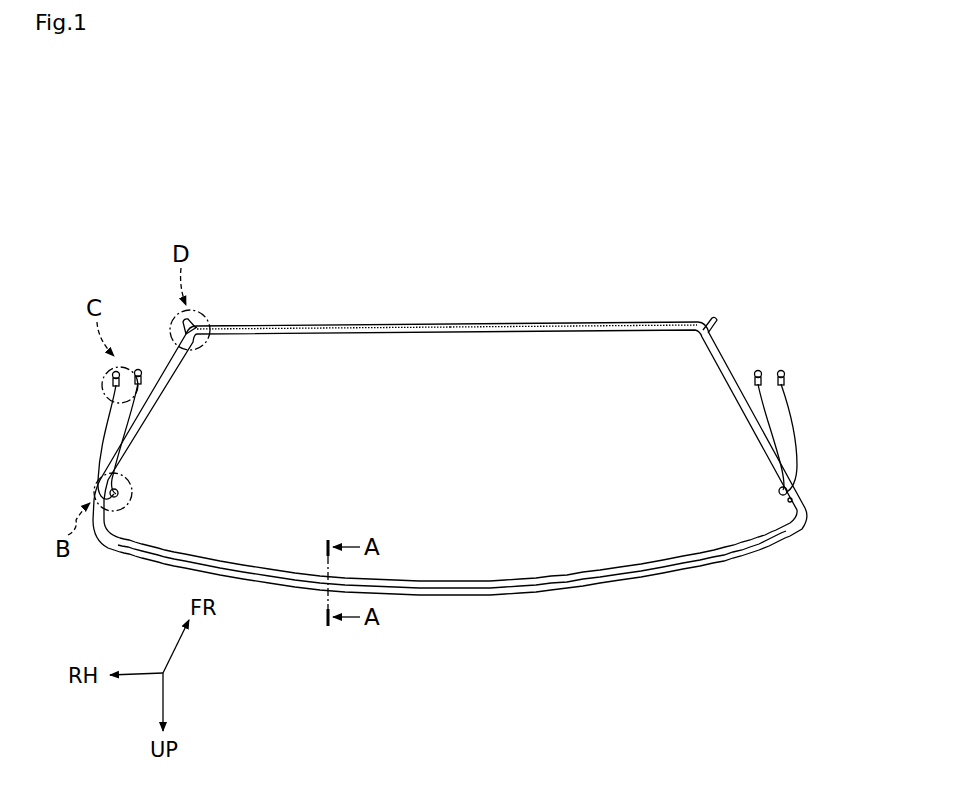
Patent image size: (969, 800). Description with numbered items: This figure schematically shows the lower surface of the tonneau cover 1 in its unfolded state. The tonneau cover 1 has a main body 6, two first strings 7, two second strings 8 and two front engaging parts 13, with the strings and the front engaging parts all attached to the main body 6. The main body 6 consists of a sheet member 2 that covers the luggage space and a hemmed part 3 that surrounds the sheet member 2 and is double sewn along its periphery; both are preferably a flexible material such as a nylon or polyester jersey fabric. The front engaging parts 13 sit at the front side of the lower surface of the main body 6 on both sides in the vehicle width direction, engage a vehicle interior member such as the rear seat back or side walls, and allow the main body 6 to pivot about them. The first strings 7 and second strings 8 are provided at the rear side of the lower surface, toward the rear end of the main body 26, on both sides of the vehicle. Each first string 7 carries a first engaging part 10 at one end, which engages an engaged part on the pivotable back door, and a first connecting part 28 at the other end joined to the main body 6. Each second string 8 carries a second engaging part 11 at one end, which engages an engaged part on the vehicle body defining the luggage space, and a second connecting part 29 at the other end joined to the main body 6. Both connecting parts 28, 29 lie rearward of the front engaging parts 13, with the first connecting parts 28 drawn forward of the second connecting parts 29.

The tonneau cover 1 is at (450, 414).
The sheet member 2 is at (362, 346).
The hemmed part 3 is at (318, 327).
The main body of the tonneau cover 6 is at (620, 346).
The first string 7 is at (128, 418).
The second string 8 is at (107, 453).
The first engaging part 10 is at (758, 366).
The second engaging part 11 is at (784, 370).
The front engaging part 13 is at (200, 320).
The rear end of the main body 26 is at (450, 596).
The first connecting part 28 is at (779, 490).
The second connecting part 29 is at (788, 501).